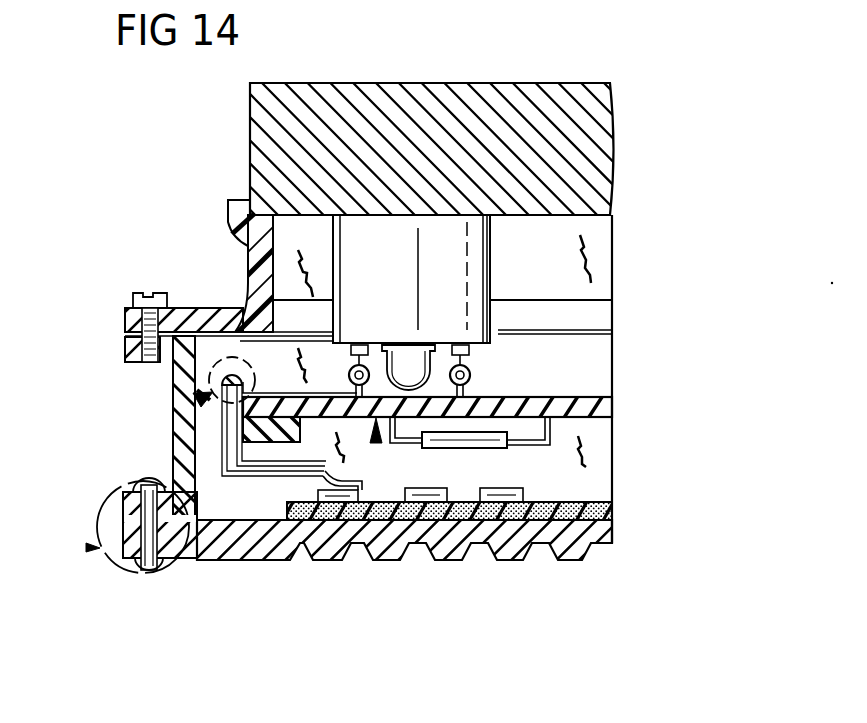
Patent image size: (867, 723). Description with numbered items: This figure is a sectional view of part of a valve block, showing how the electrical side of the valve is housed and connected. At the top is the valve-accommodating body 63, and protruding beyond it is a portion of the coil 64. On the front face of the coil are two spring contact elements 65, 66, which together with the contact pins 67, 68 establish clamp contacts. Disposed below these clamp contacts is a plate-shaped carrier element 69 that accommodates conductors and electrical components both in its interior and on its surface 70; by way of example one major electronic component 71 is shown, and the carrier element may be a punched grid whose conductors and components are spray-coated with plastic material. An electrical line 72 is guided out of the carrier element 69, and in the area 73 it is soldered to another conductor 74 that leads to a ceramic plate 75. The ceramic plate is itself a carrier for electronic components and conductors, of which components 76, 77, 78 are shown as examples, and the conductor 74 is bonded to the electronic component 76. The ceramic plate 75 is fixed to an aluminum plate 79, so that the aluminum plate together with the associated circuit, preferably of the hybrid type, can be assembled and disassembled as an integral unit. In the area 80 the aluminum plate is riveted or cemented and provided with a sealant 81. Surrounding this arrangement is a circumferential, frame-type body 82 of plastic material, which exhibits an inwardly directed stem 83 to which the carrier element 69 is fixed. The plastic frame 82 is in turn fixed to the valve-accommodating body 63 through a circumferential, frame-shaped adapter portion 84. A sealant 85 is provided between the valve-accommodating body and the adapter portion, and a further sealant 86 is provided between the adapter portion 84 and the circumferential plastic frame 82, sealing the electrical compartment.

The valve-accommodating body 63 is at (262, 112).
The coil 64 is at (470, 270).
The spring contact element 65 is at (350, 367).
The spring contact element 66 is at (470, 375).
The contact pin 67 is at (352, 394).
The contact pin 68 is at (470, 390).
The plate-shaped carrier element 69 is at (612, 406).
The surface of the carrier element 70 is at (377, 443).
The electronic component 71 is at (507, 447).
The electrical line 72 is at (273, 419).
The soldering area 73 is at (198, 401).
The conductor 74 is at (240, 440).
The ceramic plate 75 is at (545, 546).
The electronic component 76 is at (347, 548).
The electronic component 77 is at (423, 502).
The electronic component 78 is at (510, 502).
The aluminum plate 79 is at (577, 548).
The riveting or cementing area 80 is at (86, 548).
The sealant 81 is at (125, 520).
The circumferential frame-type body 82 is at (173, 360).
The stem 83 is at (292, 480).
The adapter portion 84 is at (247, 247).
The sealant 85 is at (250, 217).
The sealant 86 is at (125, 335).